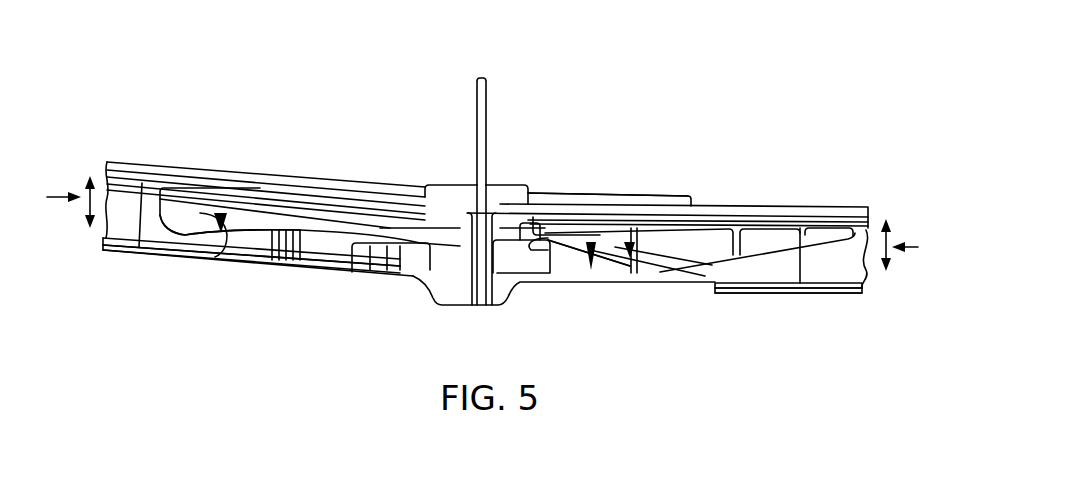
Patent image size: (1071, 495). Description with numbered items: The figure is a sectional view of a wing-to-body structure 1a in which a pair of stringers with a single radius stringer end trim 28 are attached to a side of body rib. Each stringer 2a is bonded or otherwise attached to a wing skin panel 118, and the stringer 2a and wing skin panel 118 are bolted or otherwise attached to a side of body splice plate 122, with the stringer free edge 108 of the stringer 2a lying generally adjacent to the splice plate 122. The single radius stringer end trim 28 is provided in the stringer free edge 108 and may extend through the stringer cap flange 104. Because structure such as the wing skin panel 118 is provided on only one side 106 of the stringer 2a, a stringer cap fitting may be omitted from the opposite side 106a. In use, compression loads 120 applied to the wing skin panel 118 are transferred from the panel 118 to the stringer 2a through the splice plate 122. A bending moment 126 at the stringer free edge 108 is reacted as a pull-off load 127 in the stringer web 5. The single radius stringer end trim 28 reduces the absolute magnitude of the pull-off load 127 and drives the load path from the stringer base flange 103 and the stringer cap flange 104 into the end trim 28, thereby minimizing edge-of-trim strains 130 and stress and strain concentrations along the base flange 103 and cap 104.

The wing-to-body structure 1a is at (510, 80).
The side of body splice plate 122 is at (512, 205).
The stringer free edge 108 is at (427, 203).
The stringer with single radius stringer end trim 2a is at (273, 190).
The side of the stringer 106 is at (323, 200).
The pull-off load 127 is at (218, 234).
The wing skin panel 118 is at (238, 183).
The stringer web 5 is at (167, 213).
The stringer base flange 103 is at (128, 217).
The bending moment 126 is at (102, 202).
The compression loads 120 is at (47, 198).
The opposite side of the stringer 106a is at (122, 248).
The stringer cap flange 104 is at (157, 253).
The single radius stringer end trim 28 is at (252, 281).
The edge-of-trim strains 130 is at (325, 255).